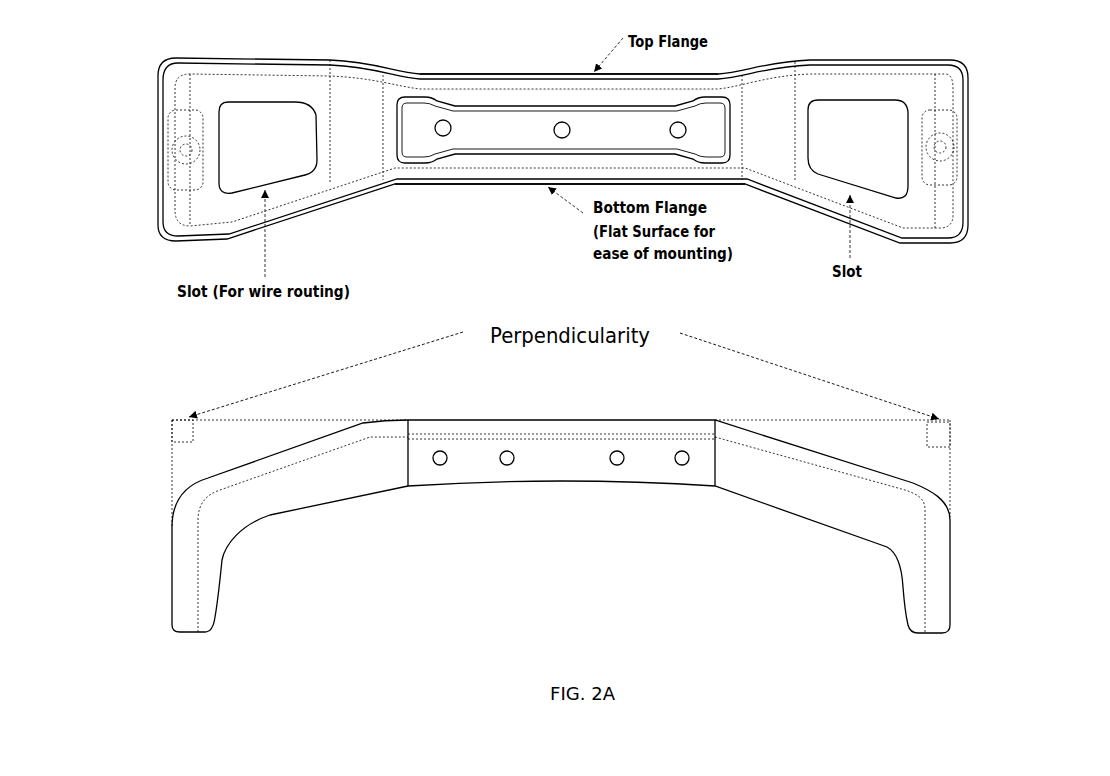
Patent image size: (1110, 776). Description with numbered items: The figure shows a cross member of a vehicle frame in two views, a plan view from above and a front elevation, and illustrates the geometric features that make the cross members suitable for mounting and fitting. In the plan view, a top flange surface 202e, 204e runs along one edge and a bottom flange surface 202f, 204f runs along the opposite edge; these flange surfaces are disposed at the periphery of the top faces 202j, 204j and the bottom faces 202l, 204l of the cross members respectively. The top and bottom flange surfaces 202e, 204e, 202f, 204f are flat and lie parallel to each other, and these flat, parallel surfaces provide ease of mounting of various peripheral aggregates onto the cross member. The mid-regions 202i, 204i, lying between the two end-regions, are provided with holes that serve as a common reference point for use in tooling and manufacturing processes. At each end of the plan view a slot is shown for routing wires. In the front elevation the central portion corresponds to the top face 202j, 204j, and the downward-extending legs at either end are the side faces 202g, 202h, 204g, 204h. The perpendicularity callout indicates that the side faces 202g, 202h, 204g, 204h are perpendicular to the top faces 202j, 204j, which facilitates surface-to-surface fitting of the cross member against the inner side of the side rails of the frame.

The bottom face 202l is at (532, 88).
The bottom face 204l is at (465, 97).
The top flange surface 202e is at (569, 44).
The top flange surface 204e is at (505, 75).
The bottom flange surface 202f is at (562, 221).
The bottom flange surface 204f is at (487, 184).
The mid-region 202i is at (560, 202).
The mid-region 204i is at (540, 128).
The top face 202j is at (561, 421).
The top face 204j is at (513, 420).
The side face 202g is at (503, 555).
The side face 202h is at (503, 555).
The side face 204g is at (503, 555).
The side face 204h is at (169, 566).